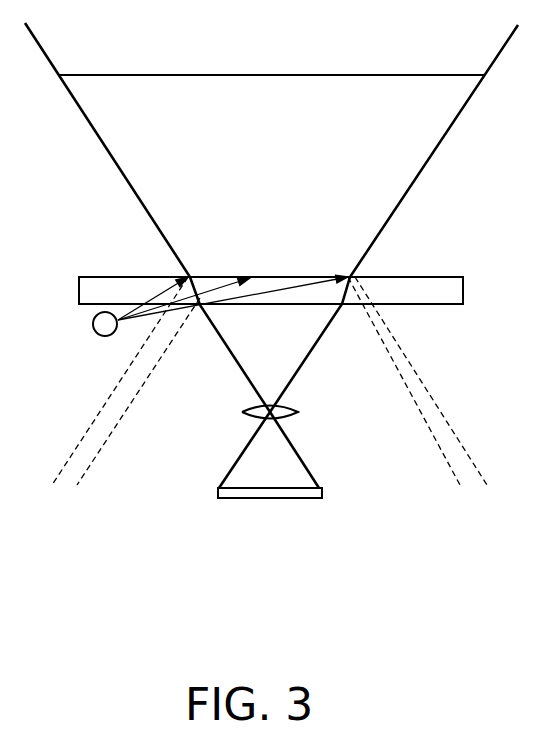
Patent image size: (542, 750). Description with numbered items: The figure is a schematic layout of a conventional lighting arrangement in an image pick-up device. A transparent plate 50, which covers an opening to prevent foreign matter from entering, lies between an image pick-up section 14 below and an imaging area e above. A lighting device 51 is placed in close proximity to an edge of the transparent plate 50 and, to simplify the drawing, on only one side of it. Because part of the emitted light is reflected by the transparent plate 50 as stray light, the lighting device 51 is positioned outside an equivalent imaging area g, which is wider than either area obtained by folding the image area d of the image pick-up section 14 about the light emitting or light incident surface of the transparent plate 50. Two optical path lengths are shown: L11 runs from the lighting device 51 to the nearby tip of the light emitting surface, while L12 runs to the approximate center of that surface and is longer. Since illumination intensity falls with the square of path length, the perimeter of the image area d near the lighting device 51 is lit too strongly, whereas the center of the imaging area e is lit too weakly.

The imaging area e is at (354, 97).
The optical path length L12 is at (217, 292).
The optical path length L11 is at (160, 297).
The transparent plate 50 is at (425, 277).
The lighting device 51 is at (93, 324).
The image area d is at (305, 318).
The equivalent imaging area g is at (185, 415).
The image pick-up section 14 is at (308, 430).